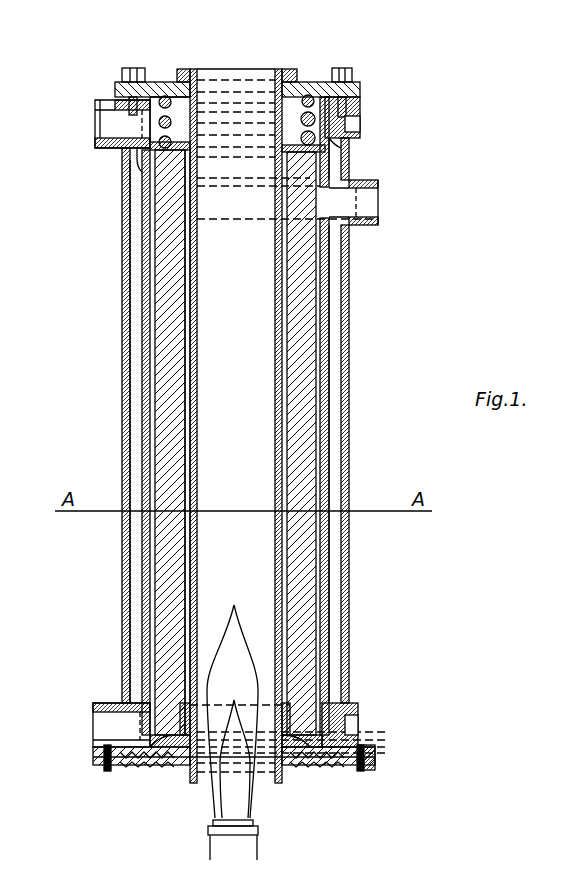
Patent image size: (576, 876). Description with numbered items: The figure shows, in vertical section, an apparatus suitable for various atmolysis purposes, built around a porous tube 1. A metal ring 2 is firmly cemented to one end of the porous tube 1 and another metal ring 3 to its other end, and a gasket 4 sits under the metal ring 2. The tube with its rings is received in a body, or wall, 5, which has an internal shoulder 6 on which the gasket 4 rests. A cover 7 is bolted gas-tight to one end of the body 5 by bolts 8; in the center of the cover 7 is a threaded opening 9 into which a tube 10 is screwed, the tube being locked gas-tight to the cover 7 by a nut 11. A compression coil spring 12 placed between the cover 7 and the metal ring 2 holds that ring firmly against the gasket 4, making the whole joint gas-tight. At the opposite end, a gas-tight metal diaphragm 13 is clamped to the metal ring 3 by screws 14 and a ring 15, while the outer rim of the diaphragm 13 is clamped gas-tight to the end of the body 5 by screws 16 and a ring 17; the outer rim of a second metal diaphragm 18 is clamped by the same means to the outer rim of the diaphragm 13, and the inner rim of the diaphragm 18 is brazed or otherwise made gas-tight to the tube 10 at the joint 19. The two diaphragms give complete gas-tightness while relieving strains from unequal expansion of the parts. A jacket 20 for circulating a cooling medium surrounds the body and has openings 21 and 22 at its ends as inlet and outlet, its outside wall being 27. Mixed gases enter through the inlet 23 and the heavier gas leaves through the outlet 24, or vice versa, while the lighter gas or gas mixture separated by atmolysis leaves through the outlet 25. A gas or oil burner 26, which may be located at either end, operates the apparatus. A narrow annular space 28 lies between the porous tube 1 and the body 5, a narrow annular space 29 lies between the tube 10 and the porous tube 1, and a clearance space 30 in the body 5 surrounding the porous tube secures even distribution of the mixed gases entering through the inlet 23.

The porous tube 1 is at (303, 320).
The metal ring 2 is at (329, 158).
The metal ring 3 is at (318, 738).
The gasket 4 is at (326, 183).
The body 5 is at (333, 257).
The internal shoulder 6 is at (156, 177).
The cover 7 is at (309, 92).
The bolts 8 is at (344, 82).
The threaded opening 9 is at (289, 70).
The tube 10 is at (160, 262).
The nut 11 is at (190, 70).
The compression coil spring 12 is at (162, 83).
The metal diaphragm 13 is at (128, 756).
The screws 14 is at (176, 768).
The ring 15 is at (161, 767).
The screws 16 is at (108, 754).
The ring 17 is at (100, 768).
The metal diaphragm 18 is at (133, 760).
The brazed joint 19 is at (190, 768).
The jacket 20 is at (333, 412).
The opening 21 is at (357, 722).
The opening 22 is at (355, 121).
The inlet 23 is at (366, 205).
The outlet 24 is at (106, 725).
The outlet 25 is at (118, 129).
The burner 26 is at (246, 844).
The outside wall 27 is at (346, 568).
The annular space 28 is at (318, 461).
The annular space 29 is at (188, 421).
The clearance space 30 is at (150, 204).